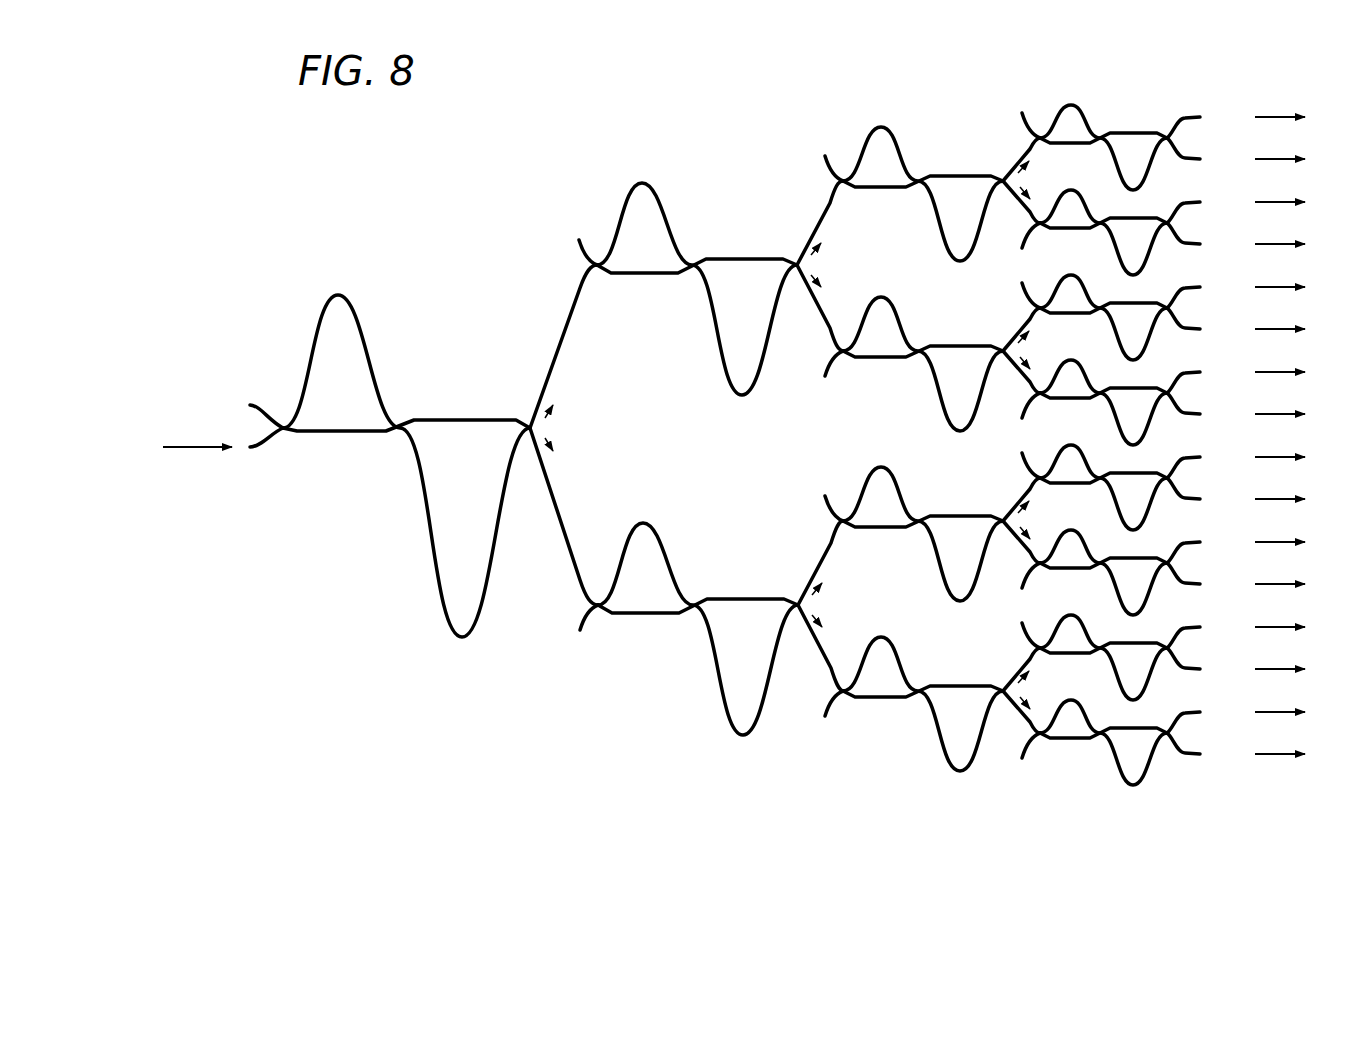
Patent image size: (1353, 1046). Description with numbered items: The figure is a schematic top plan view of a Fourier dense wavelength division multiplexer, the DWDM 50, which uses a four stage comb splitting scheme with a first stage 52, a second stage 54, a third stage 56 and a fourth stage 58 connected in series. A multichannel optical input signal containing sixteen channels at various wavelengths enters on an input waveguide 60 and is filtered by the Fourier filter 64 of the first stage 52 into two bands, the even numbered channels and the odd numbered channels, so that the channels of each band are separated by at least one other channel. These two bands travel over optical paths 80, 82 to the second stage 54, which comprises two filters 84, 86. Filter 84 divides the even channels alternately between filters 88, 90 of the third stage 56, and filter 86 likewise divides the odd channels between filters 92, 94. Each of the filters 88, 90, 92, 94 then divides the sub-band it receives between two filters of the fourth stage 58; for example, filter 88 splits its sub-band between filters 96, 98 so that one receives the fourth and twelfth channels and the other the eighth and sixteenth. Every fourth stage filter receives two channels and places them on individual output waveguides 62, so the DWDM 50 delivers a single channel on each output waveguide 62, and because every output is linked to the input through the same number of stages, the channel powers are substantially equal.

The DWDM 50 is at (260, 192).
The first stage 52 is at (347, 727).
The second stage 54 is at (565, 760).
The third stage 56 is at (853, 845).
The fourth stage 58 is at (1098, 845).
The input waveguide 60 is at (270, 440).
The output waveguides 62 is at (1178, 128).
The Fourier filter 64 is at (427, 400).
The optical path 80 is at (562, 500).
The optical path 82 is at (565, 350).
The filter 84 is at (716, 578).
The filter 86 is at (716, 237).
The filter 88 is at (937, 668).
The filter 90 is at (915, 541).
The filter 92 is at (937, 330).
The filter 94 is at (937, 162).
The filter 96 is at (1098, 752).
The filter 98 is at (1098, 668).